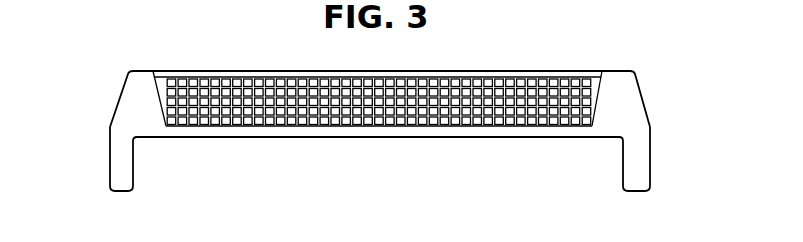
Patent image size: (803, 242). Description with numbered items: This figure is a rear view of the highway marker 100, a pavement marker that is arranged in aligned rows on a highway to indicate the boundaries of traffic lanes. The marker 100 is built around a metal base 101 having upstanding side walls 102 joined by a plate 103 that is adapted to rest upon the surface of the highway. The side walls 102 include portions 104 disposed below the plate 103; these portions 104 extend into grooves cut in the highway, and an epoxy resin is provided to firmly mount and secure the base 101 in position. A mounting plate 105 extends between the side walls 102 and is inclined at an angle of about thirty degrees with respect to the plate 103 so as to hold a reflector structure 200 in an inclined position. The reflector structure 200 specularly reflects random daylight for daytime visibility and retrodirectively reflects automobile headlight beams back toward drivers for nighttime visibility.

The highway marker 100 is at (167, 63).
The metal base 101 is at (118, 90).
The side walls 102 is at (125, 118).
The plate 103 is at (322, 128).
The portions 104 is at (120, 173).
The mounting plates 105 is at (433, 72).
The reflector structure 200 is at (318, 101).